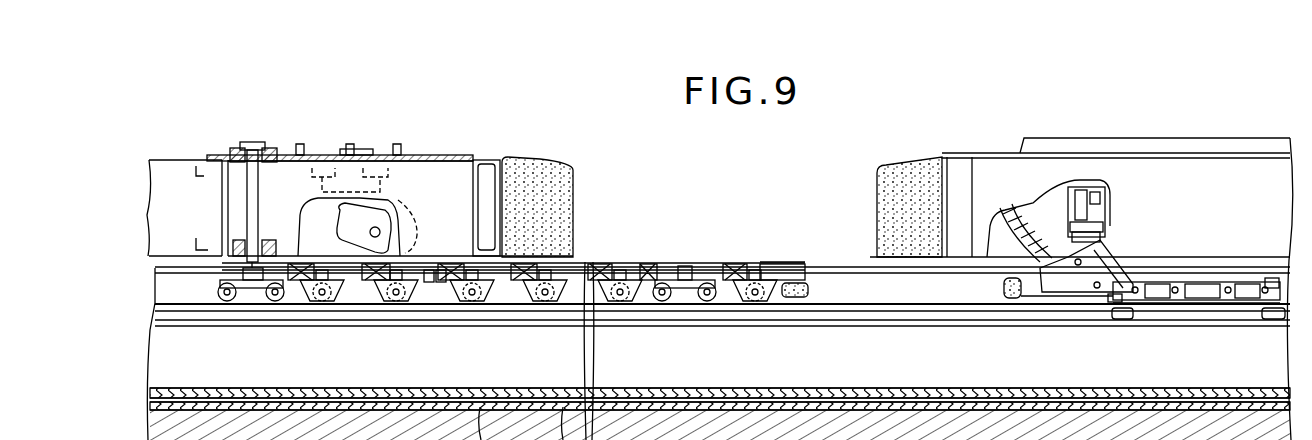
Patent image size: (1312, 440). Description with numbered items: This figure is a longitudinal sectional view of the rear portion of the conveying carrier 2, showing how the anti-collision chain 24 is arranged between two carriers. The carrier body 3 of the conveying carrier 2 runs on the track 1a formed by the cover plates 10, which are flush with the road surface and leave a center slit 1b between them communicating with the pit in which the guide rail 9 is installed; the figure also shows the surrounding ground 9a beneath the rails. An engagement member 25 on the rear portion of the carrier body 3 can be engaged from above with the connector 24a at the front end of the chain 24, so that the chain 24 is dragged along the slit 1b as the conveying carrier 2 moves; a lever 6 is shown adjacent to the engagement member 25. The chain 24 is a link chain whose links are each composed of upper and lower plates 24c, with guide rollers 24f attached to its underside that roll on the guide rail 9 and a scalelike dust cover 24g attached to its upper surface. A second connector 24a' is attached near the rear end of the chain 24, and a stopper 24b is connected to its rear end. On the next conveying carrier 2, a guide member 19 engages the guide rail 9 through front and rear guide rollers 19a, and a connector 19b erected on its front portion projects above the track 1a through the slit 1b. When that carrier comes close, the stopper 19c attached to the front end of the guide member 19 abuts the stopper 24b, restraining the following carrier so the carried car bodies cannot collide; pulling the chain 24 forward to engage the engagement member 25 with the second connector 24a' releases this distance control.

The cover plate 10 is at (253, 116).
The engagement member 25 is at (255, 213).
The carrier body 3 is at (421, 153).
The conveying carrier 2 is at (468, 150).
The cam lever 6 is at (395, 247).
The dust cover 24g is at (583, 265).
The second connector 24a' is at (709, 255).
The track 1a is at (793, 264).
The center slit 1b is at (861, 268).
The connector 19b is at (1100, 265).
The connector 24a is at (252, 325).
The guide roller 24f is at (322, 303).
The upper and lower plates 24c is at (443, 283).
The anti-collision chain 24 is at (500, 297).
The stopper 24b is at (794, 298).
The guide rail 9 is at (855, 315).
The floor 9a is at (710, 392).
The stopper 19c is at (1011, 300).
The guide roller 19a is at (1122, 319).
The guide member 19 is at (1200, 301).